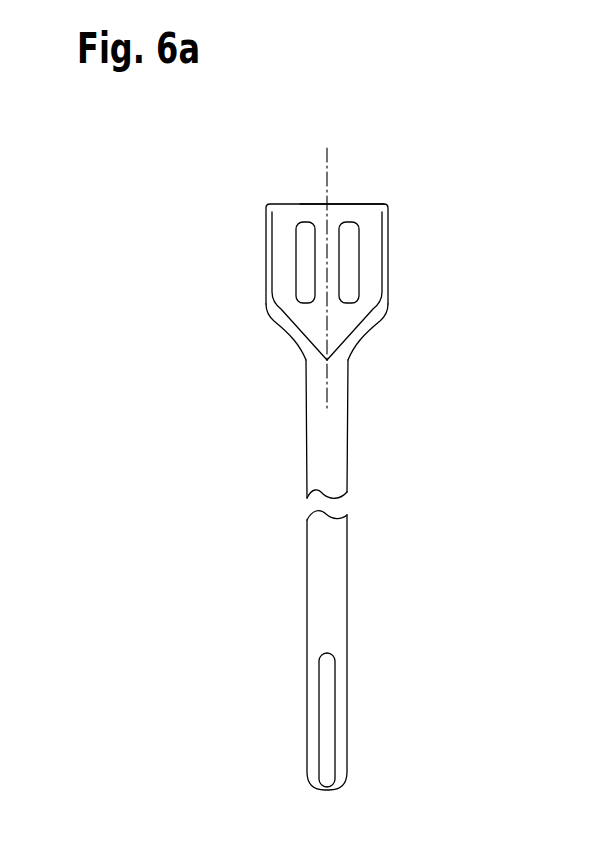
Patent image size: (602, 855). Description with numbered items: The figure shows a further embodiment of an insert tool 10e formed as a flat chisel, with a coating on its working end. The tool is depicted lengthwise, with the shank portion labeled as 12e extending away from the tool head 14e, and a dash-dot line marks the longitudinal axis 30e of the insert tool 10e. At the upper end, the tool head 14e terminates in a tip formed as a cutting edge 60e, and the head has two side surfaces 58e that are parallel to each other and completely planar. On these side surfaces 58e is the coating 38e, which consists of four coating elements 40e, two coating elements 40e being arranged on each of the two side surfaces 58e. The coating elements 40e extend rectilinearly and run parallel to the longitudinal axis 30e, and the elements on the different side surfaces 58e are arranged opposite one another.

The insert tool 10e is at (497, 167).
The handle 12e is at (338, 463).
The tool head 14e is at (255, 267).
The longitudinal axis 30e is at (327, 153).
The coating 38e is at (362, 252).
The coating elements 40e is at (302, 297).
The side surfaces 58e is at (323, 294).
The cutting edge 60e is at (365, 203).